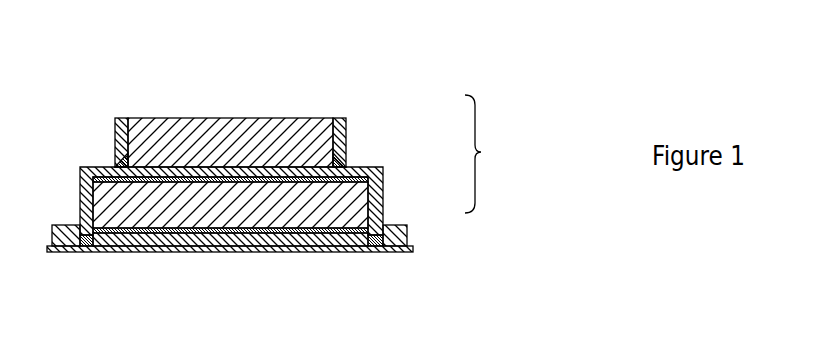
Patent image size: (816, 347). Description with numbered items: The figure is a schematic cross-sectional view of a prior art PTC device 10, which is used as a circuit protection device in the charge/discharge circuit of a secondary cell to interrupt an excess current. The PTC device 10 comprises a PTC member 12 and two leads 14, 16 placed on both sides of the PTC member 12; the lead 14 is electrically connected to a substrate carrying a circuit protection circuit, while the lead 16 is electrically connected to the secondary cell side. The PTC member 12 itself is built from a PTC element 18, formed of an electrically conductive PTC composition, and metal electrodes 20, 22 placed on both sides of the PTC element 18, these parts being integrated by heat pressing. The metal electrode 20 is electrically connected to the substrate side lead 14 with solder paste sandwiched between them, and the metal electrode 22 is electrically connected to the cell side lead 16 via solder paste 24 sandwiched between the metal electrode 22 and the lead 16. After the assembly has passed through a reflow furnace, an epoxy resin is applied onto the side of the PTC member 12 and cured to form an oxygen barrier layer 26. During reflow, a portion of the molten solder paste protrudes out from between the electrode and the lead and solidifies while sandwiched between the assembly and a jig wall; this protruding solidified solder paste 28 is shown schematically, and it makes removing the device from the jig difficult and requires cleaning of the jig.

The PTC device 10 is at (343, 93).
The PTC member 12 is at (493, 154).
The lead 14 is at (248, 250).
The lead 16 is at (252, 130).
The PTC element 18 is at (362, 200).
The metal electrode 20 is at (368, 231).
The metal electrode 22 is at (362, 165).
The solder paste 24 is at (178, 167).
The oxygen barrier layer 26 is at (80, 168).
The solder paste 28 is at (118, 163).